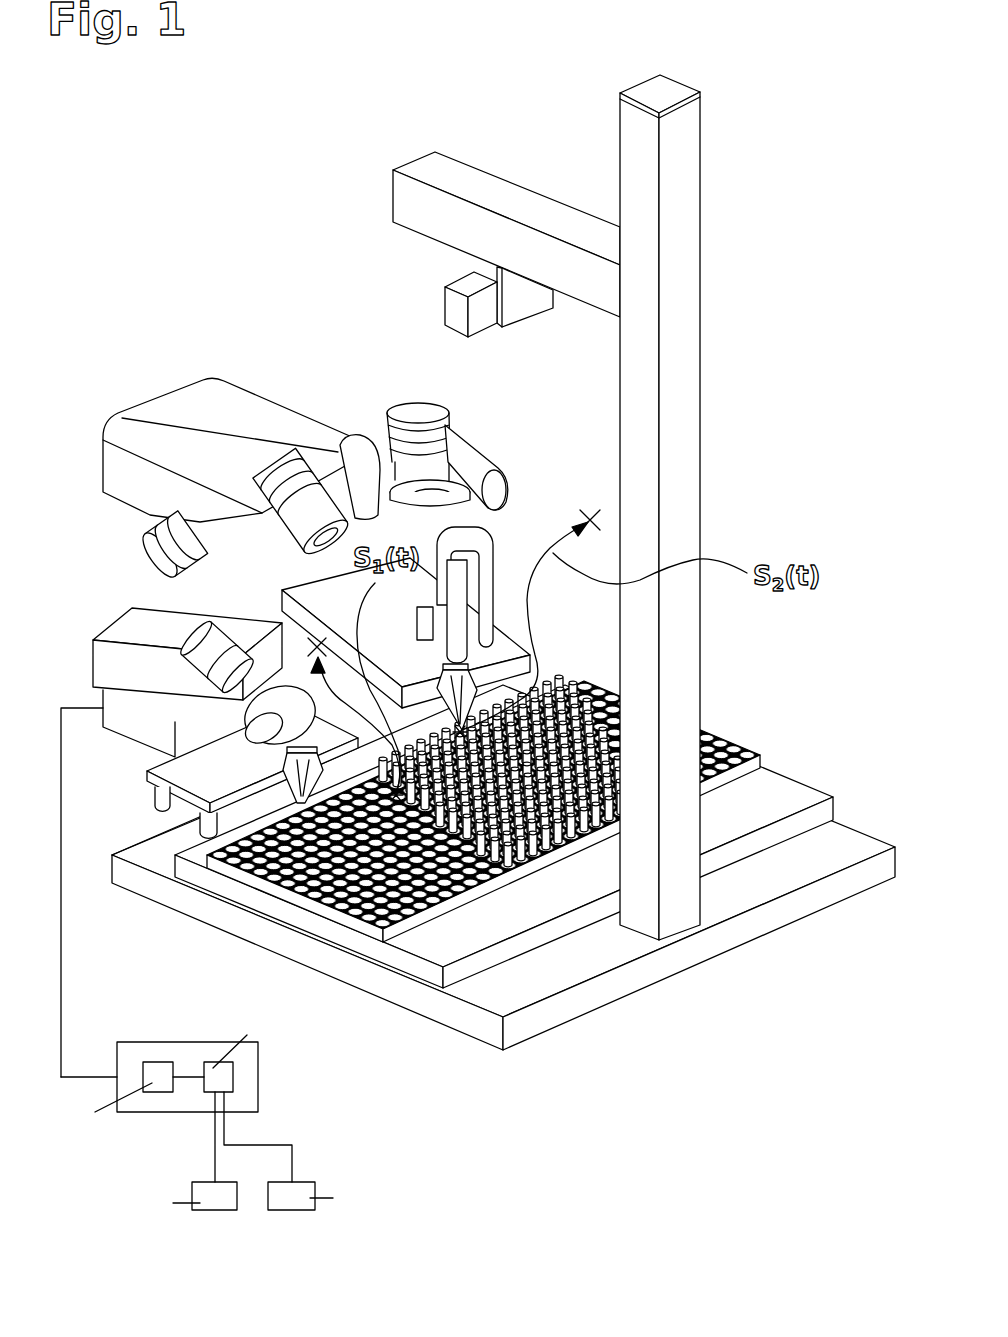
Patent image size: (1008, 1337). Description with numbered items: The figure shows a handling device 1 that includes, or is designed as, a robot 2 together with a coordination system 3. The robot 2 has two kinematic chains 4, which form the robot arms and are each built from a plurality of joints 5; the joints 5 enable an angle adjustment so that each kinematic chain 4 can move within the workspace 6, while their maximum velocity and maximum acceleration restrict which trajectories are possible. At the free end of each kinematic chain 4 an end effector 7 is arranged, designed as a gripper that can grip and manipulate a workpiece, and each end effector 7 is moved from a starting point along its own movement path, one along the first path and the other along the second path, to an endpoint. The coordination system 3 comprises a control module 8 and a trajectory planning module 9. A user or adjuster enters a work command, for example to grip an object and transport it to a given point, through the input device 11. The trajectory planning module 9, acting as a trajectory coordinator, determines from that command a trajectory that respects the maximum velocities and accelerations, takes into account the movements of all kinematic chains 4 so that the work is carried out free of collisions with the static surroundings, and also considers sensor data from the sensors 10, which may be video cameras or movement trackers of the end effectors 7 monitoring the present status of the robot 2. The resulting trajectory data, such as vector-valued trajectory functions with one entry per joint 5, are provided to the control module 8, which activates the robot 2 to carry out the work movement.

The handling device 1 is at (272, 164).
The robot 2 is at (267, 331).
The coordination system 3 is at (212, 1001).
The kinematic chains 4 is at (494, 425).
The joints 5 is at (305, 517).
The workspace 6 is at (770, 431).
The end effector 7 is at (470, 730).
The control module 8 is at (147, 1060).
The trajectory planning module 9 is at (208, 1060).
The sensors 10 is at (302, 1212).
The input device 11 is at (224, 1212).